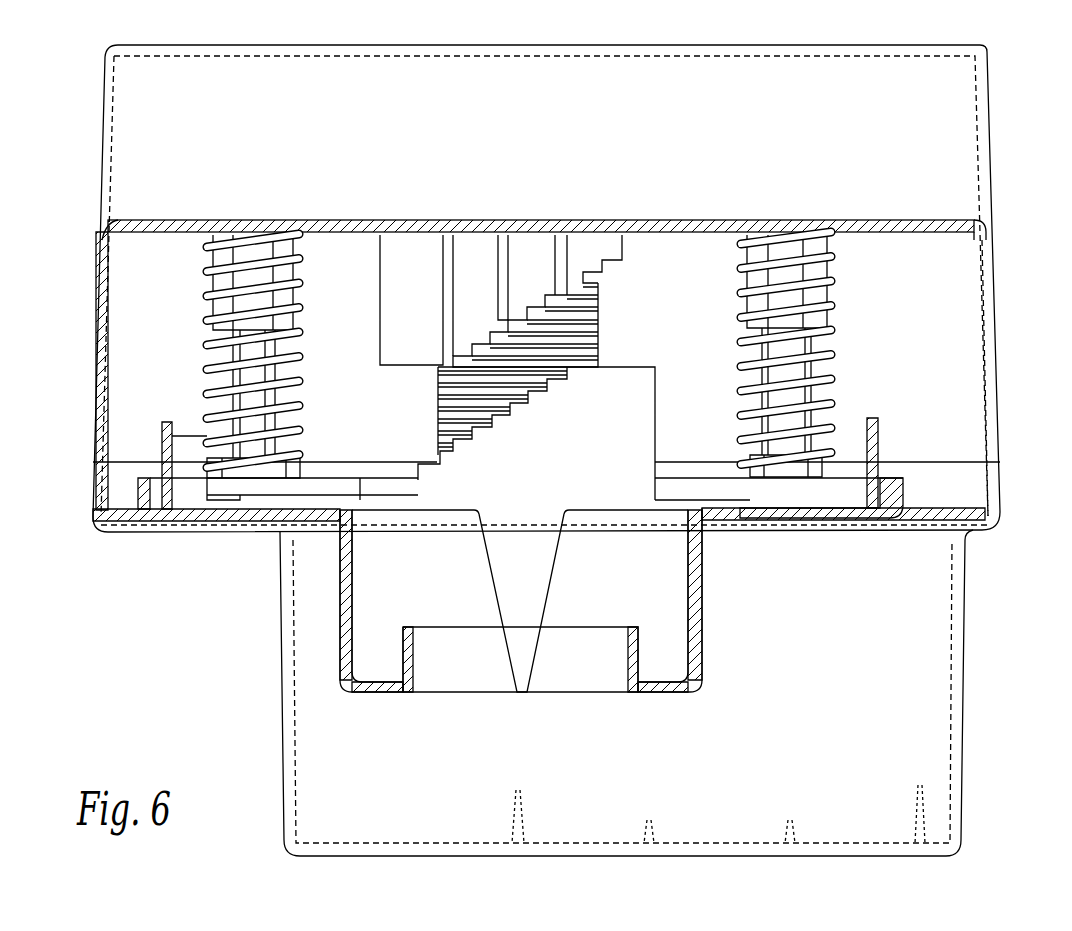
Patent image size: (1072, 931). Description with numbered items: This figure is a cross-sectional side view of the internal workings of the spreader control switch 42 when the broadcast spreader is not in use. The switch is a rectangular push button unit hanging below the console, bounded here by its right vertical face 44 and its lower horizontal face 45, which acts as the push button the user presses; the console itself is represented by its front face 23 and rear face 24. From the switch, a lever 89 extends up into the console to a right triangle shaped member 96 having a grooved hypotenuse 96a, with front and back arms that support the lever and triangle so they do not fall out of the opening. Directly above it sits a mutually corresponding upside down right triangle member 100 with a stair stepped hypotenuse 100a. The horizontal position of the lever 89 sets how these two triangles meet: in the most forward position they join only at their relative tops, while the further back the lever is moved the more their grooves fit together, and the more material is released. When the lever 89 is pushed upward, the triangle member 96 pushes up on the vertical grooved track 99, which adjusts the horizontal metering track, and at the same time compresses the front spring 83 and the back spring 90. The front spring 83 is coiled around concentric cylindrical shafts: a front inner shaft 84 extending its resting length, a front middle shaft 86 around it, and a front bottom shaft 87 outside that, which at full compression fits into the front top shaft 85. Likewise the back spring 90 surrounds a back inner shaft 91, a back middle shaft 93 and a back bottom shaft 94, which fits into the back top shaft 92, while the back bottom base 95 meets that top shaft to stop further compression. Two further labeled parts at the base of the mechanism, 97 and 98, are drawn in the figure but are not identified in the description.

The front face 23 is at (92, 345).
The rear face 24 is at (1003, 358).
The spreader control switch 42 is at (520, 627).
The right vertical face 44 is at (668, 617).
The lower horizontal face 45 is at (678, 700).
The front spring 83 is at (202, 312).
The front inner shaft 84 is at (268, 302).
The front top shaft 85 is at (302, 270).
The front middle shaft 86 is at (252, 364).
The front bottom shaft 87 is at (292, 460).
The lever 89 is at (522, 694).
The back spring 90 is at (838, 312).
The back inner shaft 91 is at (800, 276).
The back top shaft 92 is at (828, 297).
The back middle shaft 93 is at (812, 356).
The back bottom shaft 94 is at (850, 428).
The back bottom base 95 is at (827, 520).
The right triangle shaped member 96 is at (536, 433).
The grooved hypotenuse 96a is at (437, 390).
The left base plate 97 is at (360, 476).
The right base plate 98 is at (697, 476).
The vertical grooved track 99 is at (600, 312).
The upside down right triangle member 100 is at (473, 300).
The stair stepped hypotenuse 100a is at (600, 296).